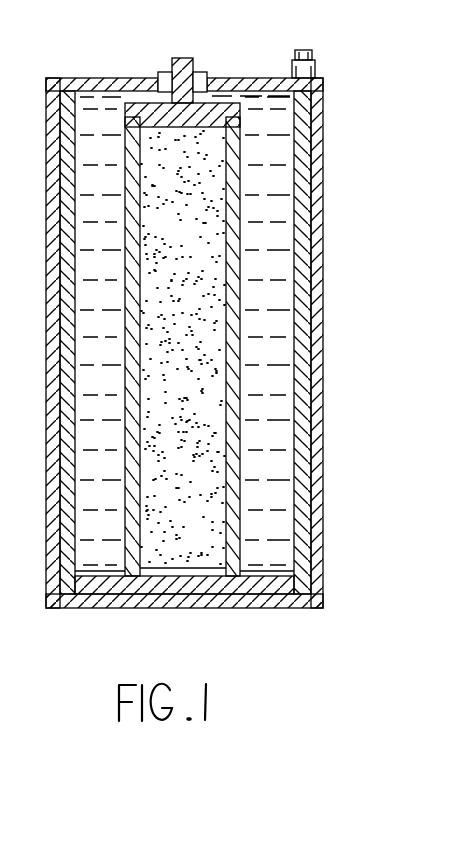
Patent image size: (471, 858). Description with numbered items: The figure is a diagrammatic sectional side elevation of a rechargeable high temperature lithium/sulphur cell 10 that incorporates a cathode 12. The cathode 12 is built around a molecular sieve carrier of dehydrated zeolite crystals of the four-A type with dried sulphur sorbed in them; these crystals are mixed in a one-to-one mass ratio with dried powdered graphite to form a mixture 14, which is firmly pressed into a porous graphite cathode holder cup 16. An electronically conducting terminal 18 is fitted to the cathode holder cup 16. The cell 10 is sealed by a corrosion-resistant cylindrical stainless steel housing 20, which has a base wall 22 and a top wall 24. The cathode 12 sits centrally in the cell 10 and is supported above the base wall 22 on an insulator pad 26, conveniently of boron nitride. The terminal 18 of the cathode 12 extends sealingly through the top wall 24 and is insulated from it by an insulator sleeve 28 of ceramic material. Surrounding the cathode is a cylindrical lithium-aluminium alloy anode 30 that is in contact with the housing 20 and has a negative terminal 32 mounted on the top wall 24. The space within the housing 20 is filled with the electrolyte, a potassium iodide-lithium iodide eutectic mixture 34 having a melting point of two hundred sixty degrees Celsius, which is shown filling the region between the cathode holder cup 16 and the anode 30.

The high temperature rechargeable lithium/sulphur cell 10 is at (372, 288).
The cathode 12 is at (243, 446).
The mixture 14 is at (215, 338).
The porous graphite cathode holder cup 16 is at (232, 520).
The electronically conducting terminal 18 is at (180, 58).
The housing 20 is at (318, 380).
The base wall 22 is at (222, 602).
The top wall 24 is at (115, 78).
The insulator pad 26 is at (290, 582).
The insulator sleeve 28 is at (200, 72).
The lithium-aluminium alloy anode 30 is at (306, 156).
The negative terminal 32 is at (318, 71).
The potassium iodide-lithium iodide eutectic mixture 34 is at (283, 228).